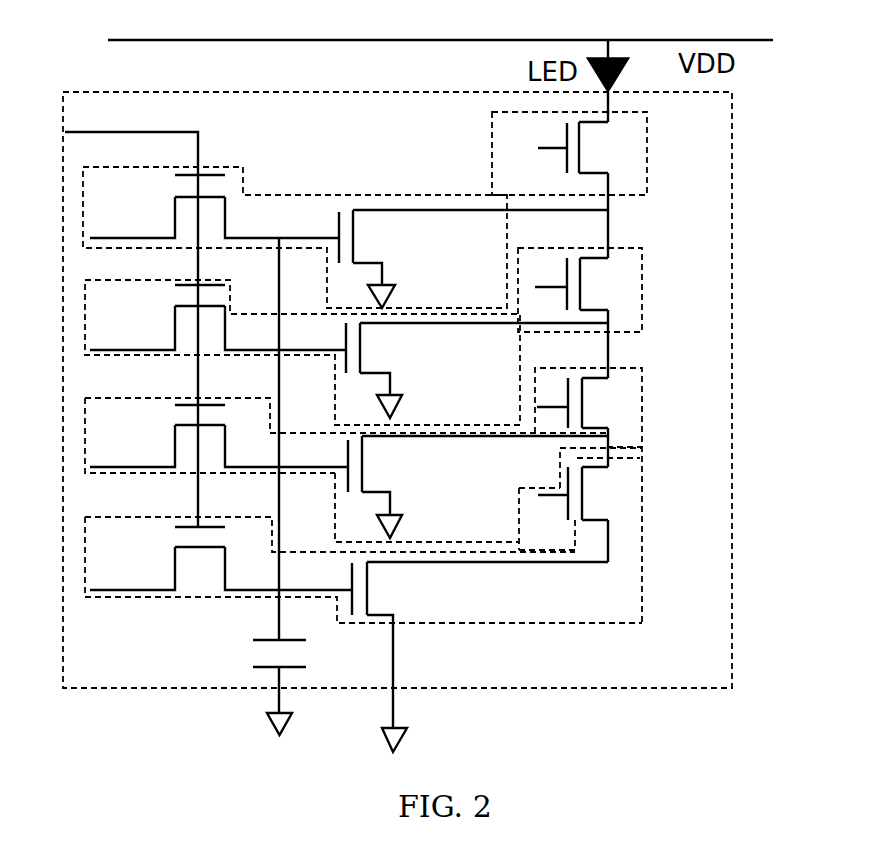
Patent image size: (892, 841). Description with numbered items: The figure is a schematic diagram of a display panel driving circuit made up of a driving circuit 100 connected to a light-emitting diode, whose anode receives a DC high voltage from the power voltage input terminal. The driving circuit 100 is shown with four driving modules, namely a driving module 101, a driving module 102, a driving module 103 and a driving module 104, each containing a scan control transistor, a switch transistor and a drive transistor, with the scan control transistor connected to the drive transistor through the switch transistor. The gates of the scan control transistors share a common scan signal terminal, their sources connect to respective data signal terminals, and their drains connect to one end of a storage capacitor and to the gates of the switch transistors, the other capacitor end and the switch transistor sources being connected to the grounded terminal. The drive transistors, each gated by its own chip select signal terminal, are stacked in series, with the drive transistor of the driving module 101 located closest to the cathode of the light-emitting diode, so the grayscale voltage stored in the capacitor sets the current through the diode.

The driving circuit 100 is at (732, 203).
The driving module 101 is at (647, 140).
The driving module 102 is at (642, 285).
The driving module 103 is at (643, 403).
The driving module 104 is at (643, 533).